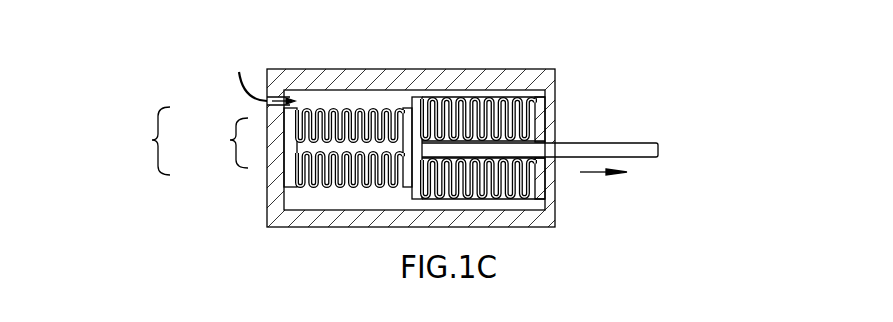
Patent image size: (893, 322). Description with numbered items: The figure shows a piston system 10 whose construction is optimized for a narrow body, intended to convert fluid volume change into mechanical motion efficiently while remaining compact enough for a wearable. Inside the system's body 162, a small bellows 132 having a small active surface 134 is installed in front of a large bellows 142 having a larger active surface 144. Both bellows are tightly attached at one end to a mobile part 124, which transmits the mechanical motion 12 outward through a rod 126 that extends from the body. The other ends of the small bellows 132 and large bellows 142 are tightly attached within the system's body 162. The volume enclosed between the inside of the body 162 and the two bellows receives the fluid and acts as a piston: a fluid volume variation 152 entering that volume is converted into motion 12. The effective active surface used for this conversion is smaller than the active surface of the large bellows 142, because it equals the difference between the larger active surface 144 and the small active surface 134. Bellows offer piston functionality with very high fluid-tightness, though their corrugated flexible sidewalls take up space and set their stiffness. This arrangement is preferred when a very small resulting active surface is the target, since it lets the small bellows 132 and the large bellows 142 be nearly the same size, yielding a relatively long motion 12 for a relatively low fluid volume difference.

The piston system 10 is at (182, 43).
The mechanical motion 12 is at (597, 176).
The mobile part 124 is at (420, 105).
The rod 126 is at (615, 145).
The small bellows 132 is at (362, 109).
The small active surface 134 is at (226, 140).
The large bellows 142 is at (473, 103).
The larger active surface 144 is at (148, 140).
The fluid volume variation 152 is at (250, 82).
The system's body 162 is at (276, 208).